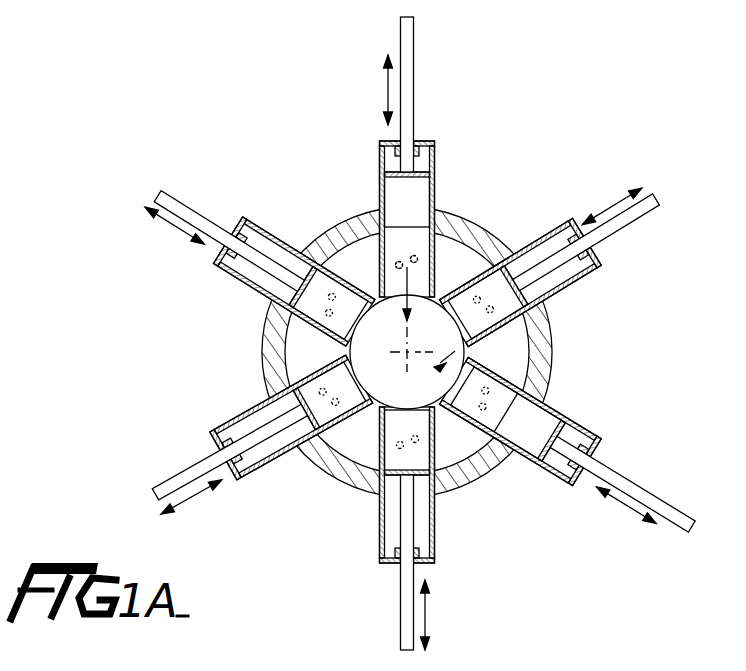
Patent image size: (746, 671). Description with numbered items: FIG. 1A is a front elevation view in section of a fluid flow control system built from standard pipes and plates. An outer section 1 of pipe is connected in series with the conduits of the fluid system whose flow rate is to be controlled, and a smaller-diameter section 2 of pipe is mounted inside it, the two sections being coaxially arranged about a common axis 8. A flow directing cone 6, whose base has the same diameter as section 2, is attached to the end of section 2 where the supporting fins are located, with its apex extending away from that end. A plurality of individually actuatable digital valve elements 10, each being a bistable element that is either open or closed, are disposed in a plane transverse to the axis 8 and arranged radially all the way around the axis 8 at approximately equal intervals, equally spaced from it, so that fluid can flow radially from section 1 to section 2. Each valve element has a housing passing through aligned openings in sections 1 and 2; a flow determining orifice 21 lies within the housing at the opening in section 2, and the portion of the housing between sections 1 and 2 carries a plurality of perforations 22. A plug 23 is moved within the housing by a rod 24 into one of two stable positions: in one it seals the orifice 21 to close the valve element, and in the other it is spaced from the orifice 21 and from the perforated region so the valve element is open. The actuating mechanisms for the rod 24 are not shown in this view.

The section of pipe 1 is at (330, 224).
The section of pipe 2 is at (363, 410).
The flow directing cone 6 is at (470, 357).
The axis 8 is at (403, 355).
The digital valve elements 10 is at (379, 167).
The flow determining orifice 21 is at (401, 300).
The perforations 22 is at (398, 257).
The plug 23 is at (424, 192).
The rod 24 is at (413, 44).